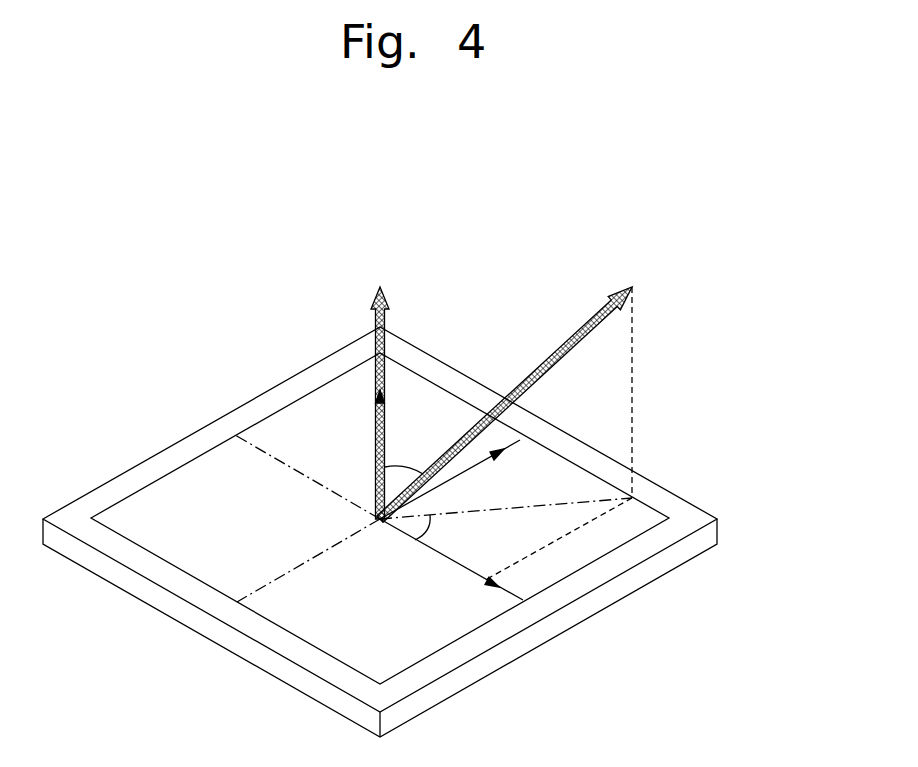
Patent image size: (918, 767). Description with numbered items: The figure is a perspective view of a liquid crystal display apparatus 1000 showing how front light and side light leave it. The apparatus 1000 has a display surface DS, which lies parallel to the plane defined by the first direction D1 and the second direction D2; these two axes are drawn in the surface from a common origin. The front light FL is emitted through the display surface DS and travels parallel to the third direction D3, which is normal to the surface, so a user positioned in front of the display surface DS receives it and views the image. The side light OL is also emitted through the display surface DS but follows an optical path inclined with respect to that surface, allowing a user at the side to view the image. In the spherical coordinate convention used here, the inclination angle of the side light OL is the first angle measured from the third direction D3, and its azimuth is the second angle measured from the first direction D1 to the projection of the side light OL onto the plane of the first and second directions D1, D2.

The liquid crystal display apparatus 1000 is at (708, 534).
The display surface DS is at (405, 636).
The front light FL is at (374, 309).
The side light OL is at (577, 332).
The first direction D1 is at (472, 571).
The second direction D2 is at (458, 475).
The third direction D3 is at (373, 440).